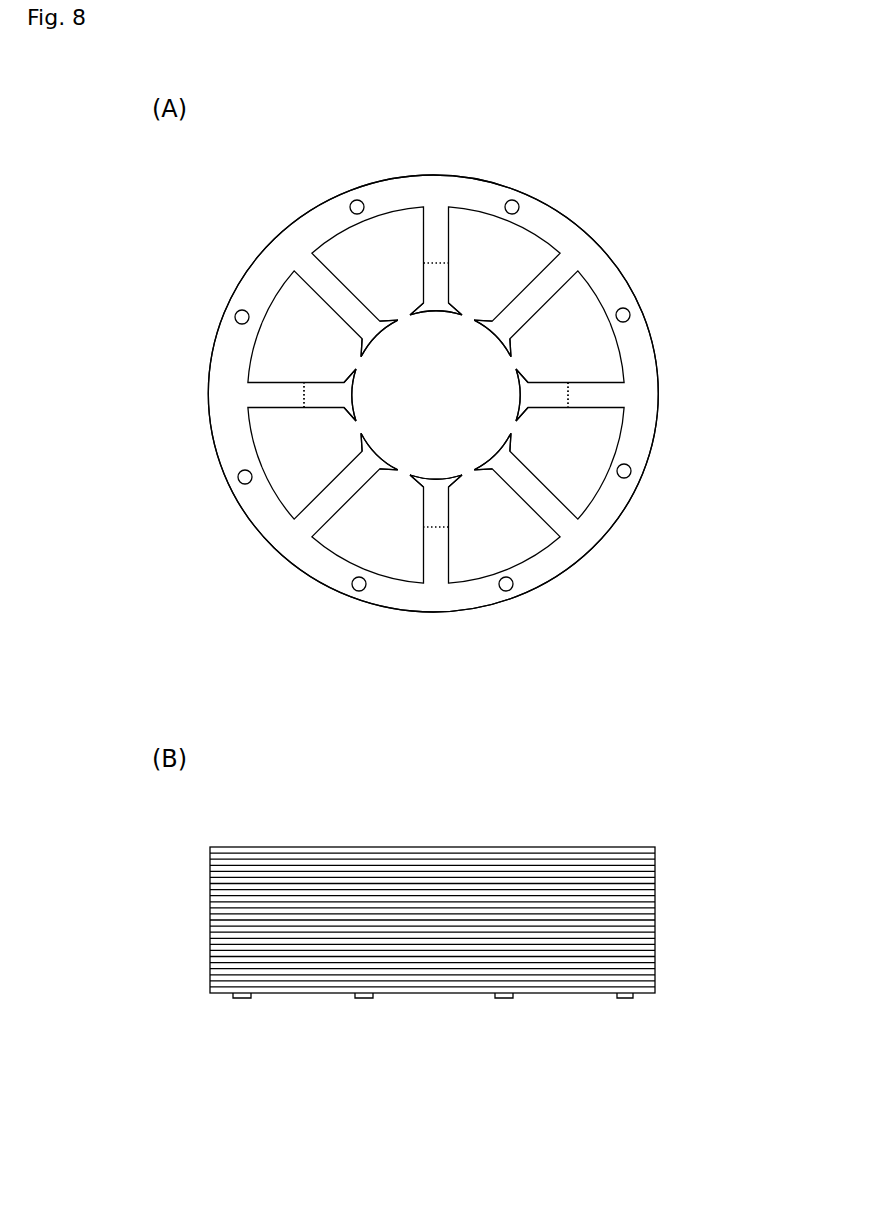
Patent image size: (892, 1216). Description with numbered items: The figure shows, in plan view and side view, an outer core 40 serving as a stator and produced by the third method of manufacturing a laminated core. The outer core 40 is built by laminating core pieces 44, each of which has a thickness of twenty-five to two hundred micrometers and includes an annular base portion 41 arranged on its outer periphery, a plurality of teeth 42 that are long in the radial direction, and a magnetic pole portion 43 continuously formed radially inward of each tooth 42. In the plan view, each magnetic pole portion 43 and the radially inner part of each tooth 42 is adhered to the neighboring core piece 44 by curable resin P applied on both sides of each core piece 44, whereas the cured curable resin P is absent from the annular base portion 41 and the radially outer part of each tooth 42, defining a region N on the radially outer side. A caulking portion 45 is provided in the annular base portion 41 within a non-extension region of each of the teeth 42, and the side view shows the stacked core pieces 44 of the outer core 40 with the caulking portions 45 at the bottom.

The outer core 40 is at (620, 172).
The annular base portion 41 is at (660, 340).
The teeth 42 is at (323, 293).
The magnetic pole portion 43 is at (437, 305).
The core pieces 44 is at (648, 932).
The caulking portion 45 is at (623, 308).
The region in which the cured curable resin is absent N is at (607, 393).
The curable resin P is at (357, 467).